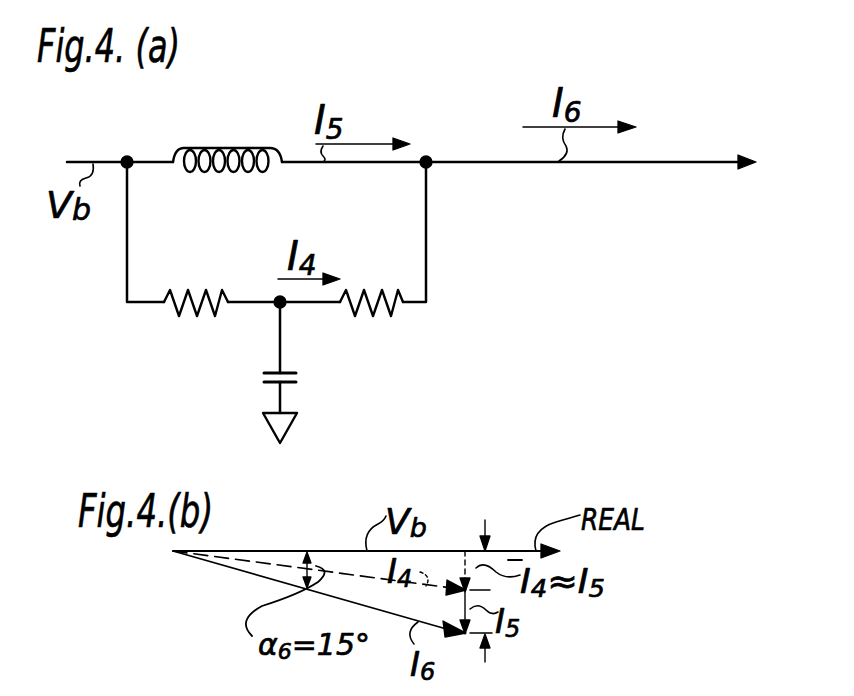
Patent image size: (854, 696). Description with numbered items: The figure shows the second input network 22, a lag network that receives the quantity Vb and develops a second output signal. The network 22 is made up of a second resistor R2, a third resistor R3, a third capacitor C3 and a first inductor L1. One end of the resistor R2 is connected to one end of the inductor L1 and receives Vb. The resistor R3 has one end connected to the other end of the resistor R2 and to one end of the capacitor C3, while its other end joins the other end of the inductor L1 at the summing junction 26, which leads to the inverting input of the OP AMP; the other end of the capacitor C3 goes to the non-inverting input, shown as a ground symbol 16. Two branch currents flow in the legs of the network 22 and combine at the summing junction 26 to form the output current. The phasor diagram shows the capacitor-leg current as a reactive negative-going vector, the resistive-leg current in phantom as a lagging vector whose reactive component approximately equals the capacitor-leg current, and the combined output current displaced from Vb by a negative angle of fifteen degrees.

The second input network 22 is at (548, 42).
The summing junction 26 is at (473, 164).
The ground 16 is at (296, 416).
The first inductor L1 is at (238, 148).
The second resistor R2 is at (190, 290).
The third resistor R3 is at (383, 264).
The third capacitor C3 is at (298, 378).